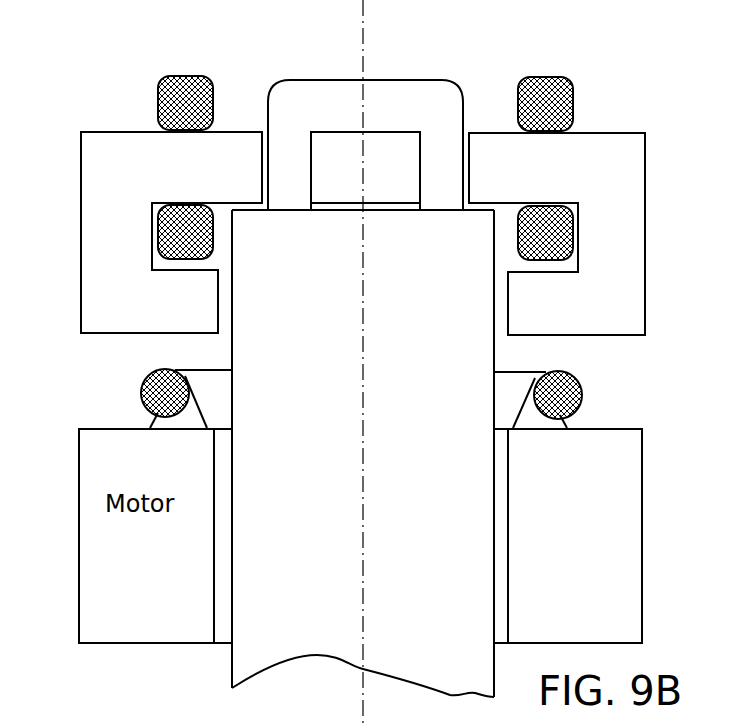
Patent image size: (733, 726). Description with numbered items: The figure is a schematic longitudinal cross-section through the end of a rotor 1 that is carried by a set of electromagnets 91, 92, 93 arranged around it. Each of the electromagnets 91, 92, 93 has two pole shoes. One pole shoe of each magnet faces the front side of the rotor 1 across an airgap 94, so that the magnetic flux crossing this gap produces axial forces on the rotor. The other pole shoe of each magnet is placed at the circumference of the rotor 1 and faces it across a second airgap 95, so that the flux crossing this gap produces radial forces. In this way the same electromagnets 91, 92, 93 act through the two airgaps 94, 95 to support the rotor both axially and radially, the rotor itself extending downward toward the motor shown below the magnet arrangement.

The shaft 1 is at (228, 667).
The electromagnet 91 is at (333, 125).
The electromagnet 92 is at (143, 124).
The electromagnet 93 is at (592, 125).
The airgap 94 is at (268, 212).
The airgap 95 is at (224, 317).